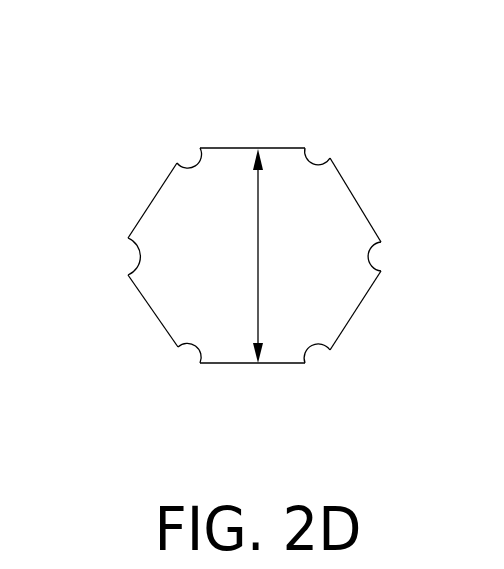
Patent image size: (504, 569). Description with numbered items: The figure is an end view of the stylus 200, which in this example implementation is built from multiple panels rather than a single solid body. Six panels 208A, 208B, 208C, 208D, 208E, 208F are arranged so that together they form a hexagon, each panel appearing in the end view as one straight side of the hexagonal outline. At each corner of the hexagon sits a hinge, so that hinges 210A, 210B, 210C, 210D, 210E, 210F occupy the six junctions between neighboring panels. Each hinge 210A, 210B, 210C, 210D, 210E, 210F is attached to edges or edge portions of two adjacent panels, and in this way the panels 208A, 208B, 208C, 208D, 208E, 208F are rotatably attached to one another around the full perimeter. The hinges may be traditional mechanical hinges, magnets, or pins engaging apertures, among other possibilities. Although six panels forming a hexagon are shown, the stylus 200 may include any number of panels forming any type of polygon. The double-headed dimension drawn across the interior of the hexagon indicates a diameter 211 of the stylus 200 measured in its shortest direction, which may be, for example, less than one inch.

The stylus 200 is at (188, 72).
The panel 208A is at (269, 147).
The panel 208B is at (349, 190).
The panel 208C is at (373, 288).
The panel 208D is at (282, 364).
The panel 208E is at (153, 313).
The panel 208F is at (153, 201).
The hinge 210A is at (316, 158).
The hinge 210B is at (373, 258).
The hinge 210C is at (321, 349).
The hinge 210D is at (196, 353).
The hinge 210E is at (134, 255).
The hinge 210F is at (193, 157).
The diameter 211 is at (279, 256).